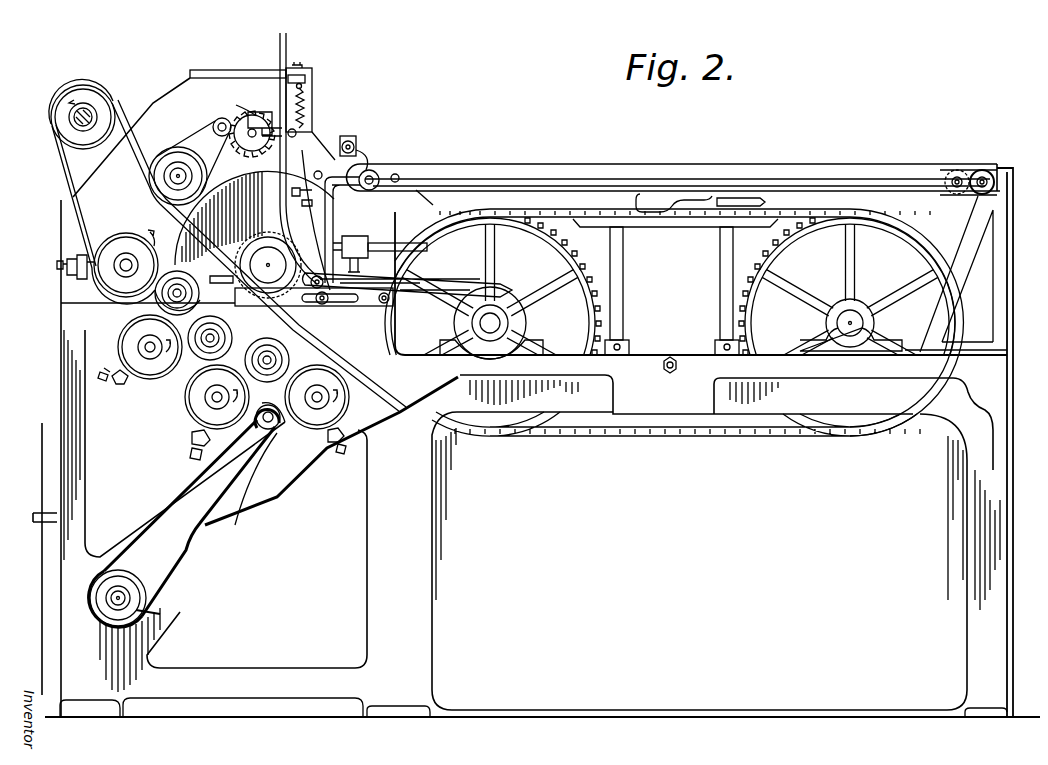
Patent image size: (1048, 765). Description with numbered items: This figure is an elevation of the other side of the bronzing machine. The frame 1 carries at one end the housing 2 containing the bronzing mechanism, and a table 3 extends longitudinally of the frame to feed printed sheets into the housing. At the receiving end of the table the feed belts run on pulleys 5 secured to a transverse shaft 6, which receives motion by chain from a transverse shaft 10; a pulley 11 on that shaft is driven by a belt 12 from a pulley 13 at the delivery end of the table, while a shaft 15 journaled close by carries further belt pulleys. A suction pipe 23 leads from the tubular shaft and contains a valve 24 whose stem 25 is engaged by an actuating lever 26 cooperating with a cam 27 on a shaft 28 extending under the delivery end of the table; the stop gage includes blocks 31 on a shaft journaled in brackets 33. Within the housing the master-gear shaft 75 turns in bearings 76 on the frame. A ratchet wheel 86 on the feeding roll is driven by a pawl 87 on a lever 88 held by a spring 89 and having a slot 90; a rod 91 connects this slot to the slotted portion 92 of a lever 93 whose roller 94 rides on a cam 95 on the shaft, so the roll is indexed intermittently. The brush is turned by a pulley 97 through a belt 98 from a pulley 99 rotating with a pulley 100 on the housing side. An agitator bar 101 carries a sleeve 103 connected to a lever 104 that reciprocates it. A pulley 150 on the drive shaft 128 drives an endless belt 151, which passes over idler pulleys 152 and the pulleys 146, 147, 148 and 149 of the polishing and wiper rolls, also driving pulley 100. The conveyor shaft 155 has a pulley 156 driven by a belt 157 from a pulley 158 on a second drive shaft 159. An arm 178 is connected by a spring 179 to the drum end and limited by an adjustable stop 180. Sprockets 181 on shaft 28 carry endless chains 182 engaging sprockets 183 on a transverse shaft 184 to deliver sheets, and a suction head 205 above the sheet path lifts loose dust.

The frame 1 is at (921, 372).
The housing 2 is at (398, 213).
The table 3 is at (556, 188).
The pulleys 5 is at (957, 170).
The transverse shaft 6 is at (960, 179).
The transverse shaft 10 is at (988, 184).
The pulley 11 is at (984, 175).
The belt 12 is at (796, 165).
The pulley 13 is at (372, 166).
The shaft 15 is at (397, 174).
The suction pipe 23 is at (317, 122).
The valve 24 is at (370, 240).
The stem 25 is at (367, 263).
The actuating lever 26 is at (443, 281).
The cam 27 is at (486, 312).
The shaft 28 is at (488, 324).
The blocks 31 is at (350, 136).
The brackets 33 is at (363, 152).
The shaft 75 is at (258, 256).
The bearings 76 is at (236, 303).
The ratchet wheel 86 is at (242, 126).
The pawl 87 is at (262, 114).
The lever 88 is at (245, 120).
The spring 89 is at (310, 82).
The slot 90 is at (306, 106).
The rod 91 is at (305, 200).
The slotted portion 92 is at (340, 306).
The lever 93 is at (383, 306).
The roller 94 is at (268, 304).
The cam 95 is at (262, 233).
The pulley 97 is at (212, 121).
The belt 98 is at (182, 144).
The pulley 99 is at (165, 180).
The pulley 100 is at (128, 114).
The bar 101 is at (284, 60).
The sleeve 103 is at (302, 66).
The lever 104 is at (278, 80).
The drive shaft 128 is at (86, 112).
The pulley 146 is at (108, 272).
The pulley 147 is at (143, 365).
The pulley 148 is at (200, 413).
The pulley 149 is at (315, 432).
The pulley 150 is at (68, 127).
The endless belt 151 is at (78, 215).
The idler pulleys 152 is at (160, 302).
The shaft 155 is at (122, 594).
The pulley 156 is at (134, 608).
The belt 157 is at (195, 540).
The pulley 158 is at (236, 450).
The second drive shaft 159 is at (280, 440).
The arm 178 is at (336, 238).
The spring 179 is at (300, 244).
The adjustable stop 180 is at (292, 188).
The sprockets 181 is at (605, 307).
The endless chains 182 is at (665, 440).
The sprockets 183 is at (788, 250).
The transverse shaft 184 is at (848, 328).
The suction head 205 is at (664, 198).